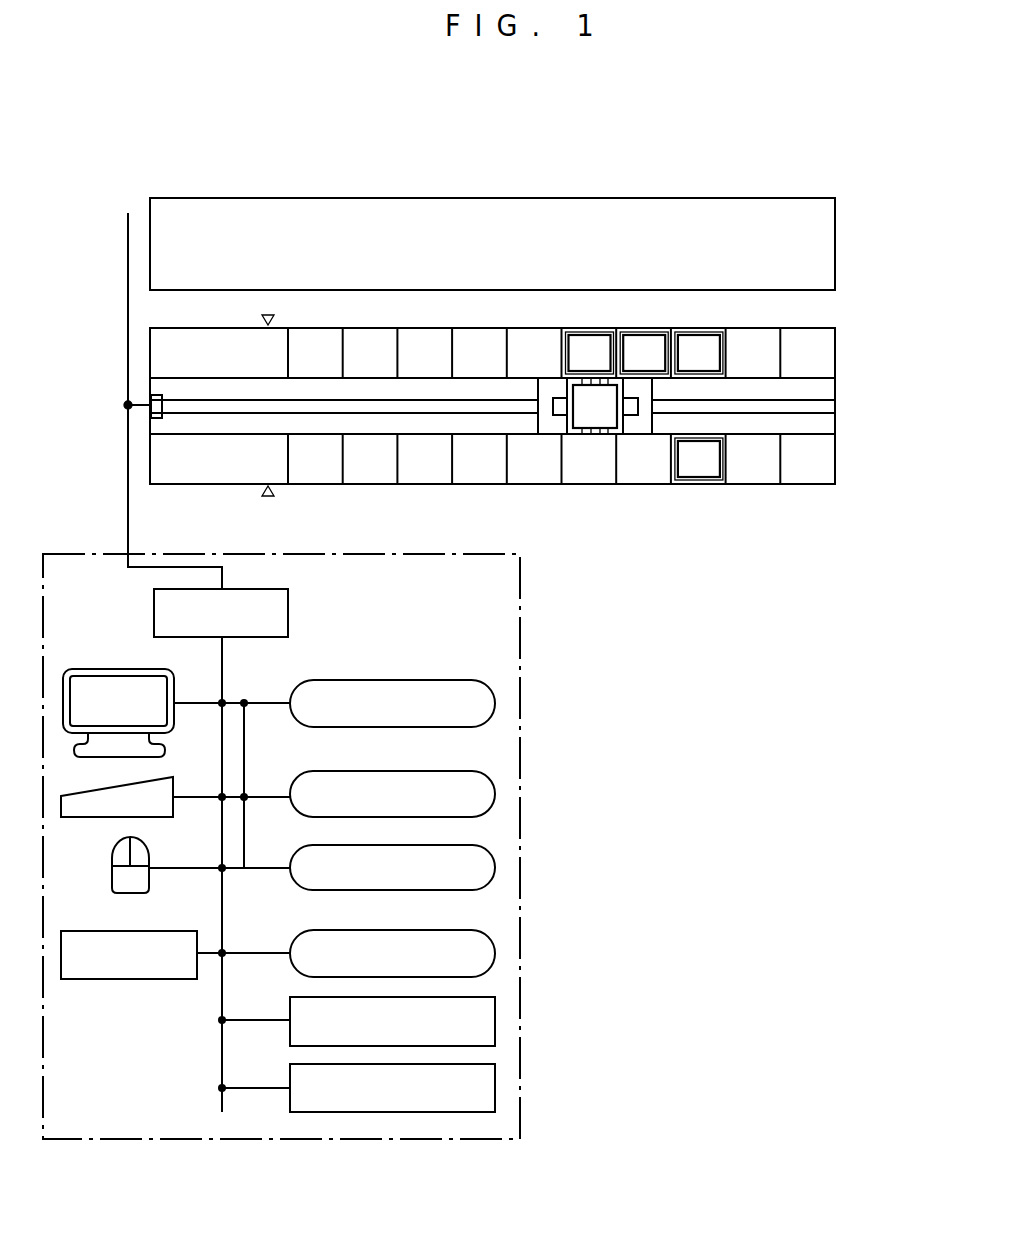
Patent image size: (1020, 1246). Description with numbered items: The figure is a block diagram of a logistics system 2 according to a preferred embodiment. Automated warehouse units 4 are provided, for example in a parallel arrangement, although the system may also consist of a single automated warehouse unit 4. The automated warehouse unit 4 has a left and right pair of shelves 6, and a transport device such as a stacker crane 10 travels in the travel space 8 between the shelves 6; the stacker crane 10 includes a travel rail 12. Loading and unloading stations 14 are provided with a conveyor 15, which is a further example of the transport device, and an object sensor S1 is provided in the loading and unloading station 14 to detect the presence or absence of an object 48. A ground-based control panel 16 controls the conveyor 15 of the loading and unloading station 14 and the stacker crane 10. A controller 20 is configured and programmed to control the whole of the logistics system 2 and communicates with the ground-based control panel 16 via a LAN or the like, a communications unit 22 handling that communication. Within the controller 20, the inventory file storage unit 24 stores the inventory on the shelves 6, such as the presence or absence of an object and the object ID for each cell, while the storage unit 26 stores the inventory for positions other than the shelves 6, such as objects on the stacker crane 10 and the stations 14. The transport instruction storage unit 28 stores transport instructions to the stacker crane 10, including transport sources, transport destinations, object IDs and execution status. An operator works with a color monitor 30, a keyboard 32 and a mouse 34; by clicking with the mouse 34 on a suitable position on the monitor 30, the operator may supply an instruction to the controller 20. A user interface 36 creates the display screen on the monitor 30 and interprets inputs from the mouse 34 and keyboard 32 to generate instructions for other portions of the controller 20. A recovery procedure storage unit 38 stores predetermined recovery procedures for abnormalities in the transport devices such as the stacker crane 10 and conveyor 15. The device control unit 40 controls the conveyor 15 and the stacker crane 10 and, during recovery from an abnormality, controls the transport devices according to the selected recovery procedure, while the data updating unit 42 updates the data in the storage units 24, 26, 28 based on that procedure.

The logistics system 2 is at (536, 1217).
The automated warehouse unit 4 is at (838, 255).
The shelves 6 is at (820, 357).
The travel space 8 is at (823, 421).
The stacker crane 10 is at (630, 422).
The travel rail 12 is at (730, 405).
The loading and unloading station 14 is at (212, 352).
The conveyor 15 is at (182, 346).
The ground-based control panel 16 is at (148, 415).
The object sensor S1 is at (284, 408).
The controller 20 is at (532, 793).
The communications unit 22 is at (290, 612).
The inventory file storage unit 24 is at (451, 680).
The storage unit 26 is at (456, 771).
The transport instruction storage unit 28 is at (458, 845).
The color monitor 30 is at (178, 688).
The keyboard 32 is at (172, 781).
The mouse 34 is at (151, 851).
The user interface 36 is at (139, 982).
The recovery procedure storage unit 38 is at (455, 930).
The device control unit 40 is at (295, 996).
The data updating unit 42 is at (295, 1064).
The object 48 is at (696, 343).